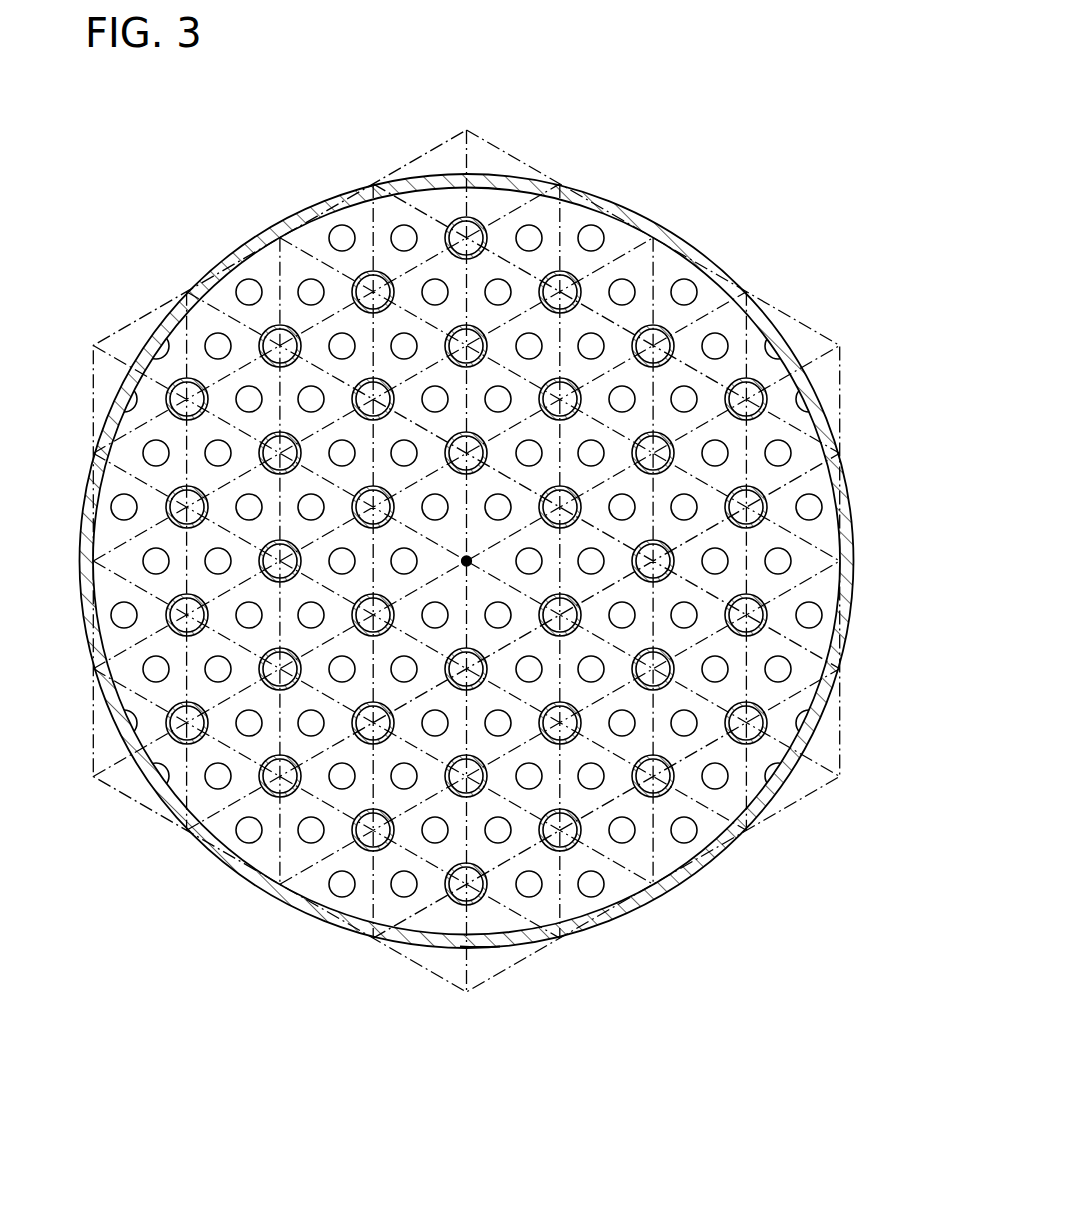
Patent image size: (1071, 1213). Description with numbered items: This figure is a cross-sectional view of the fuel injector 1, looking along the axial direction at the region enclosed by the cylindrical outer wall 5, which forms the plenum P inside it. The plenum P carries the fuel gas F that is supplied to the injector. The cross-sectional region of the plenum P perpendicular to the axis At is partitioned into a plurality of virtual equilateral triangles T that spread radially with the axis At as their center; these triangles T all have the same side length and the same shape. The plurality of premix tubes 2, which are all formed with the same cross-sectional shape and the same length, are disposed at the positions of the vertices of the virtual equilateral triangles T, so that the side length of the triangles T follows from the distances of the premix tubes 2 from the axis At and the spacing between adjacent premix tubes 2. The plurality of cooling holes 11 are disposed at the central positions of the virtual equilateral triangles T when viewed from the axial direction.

The fuel injector 1 is at (745, 78).
The premix tubes 2 is at (459, 433).
The cylindrical outer wall 5 is at (618, 206).
The cooling holes 11 is at (331, 232).
The axis At is at (462, 578).
The virtual equilateral triangles T is at (813, 327).
The fuel gas F is at (818, 607).
The plenum P is at (480, 948).